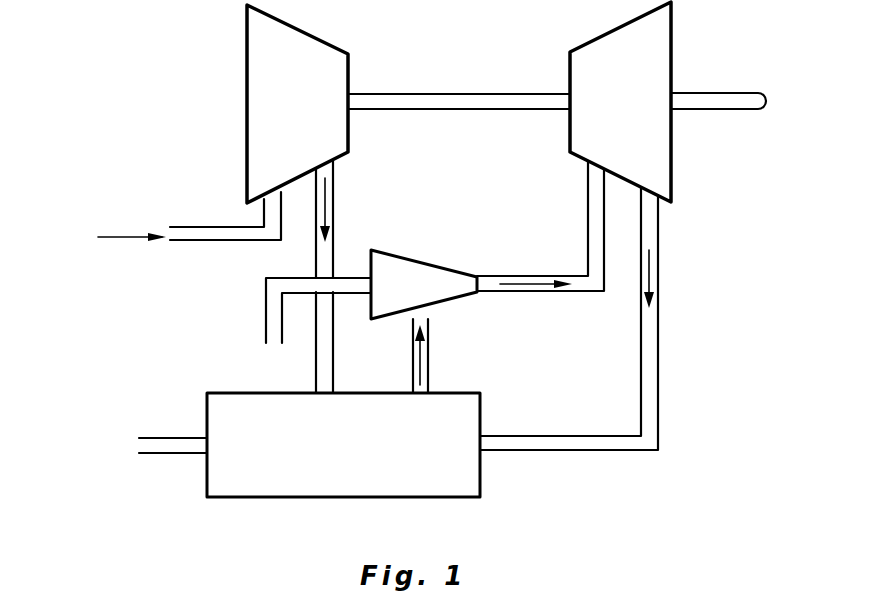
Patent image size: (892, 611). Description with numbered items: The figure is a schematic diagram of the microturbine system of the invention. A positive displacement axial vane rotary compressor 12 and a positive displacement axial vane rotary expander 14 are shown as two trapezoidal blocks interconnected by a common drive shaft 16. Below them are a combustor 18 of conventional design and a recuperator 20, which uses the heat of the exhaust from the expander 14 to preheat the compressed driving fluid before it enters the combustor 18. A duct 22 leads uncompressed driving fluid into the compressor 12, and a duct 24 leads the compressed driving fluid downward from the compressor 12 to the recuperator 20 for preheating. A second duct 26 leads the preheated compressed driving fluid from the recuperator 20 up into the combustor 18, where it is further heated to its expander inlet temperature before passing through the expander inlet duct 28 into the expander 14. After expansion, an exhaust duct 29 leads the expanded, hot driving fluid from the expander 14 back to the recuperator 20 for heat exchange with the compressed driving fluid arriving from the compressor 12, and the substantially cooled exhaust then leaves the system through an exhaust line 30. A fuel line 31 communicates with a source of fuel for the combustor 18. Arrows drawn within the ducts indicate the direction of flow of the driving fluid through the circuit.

The positive displacement axial vane rotary compressor 12 is at (308, 121).
The positive displacement axial vane rotary expander 14 is at (638, 116).
The common drive shaft 16 is at (432, 90).
The combustor 18 is at (421, 298).
The recuperator 20 is at (355, 458).
The duct 22 is at (187, 243).
The duct 24 is at (335, 192).
The second duct 26 is at (430, 337).
The expander inlet duct 28 is at (586, 222).
The exhaust duct 29 is at (641, 381).
The exhaust line 30 is at (157, 457).
The fuel line 31 is at (266, 315).